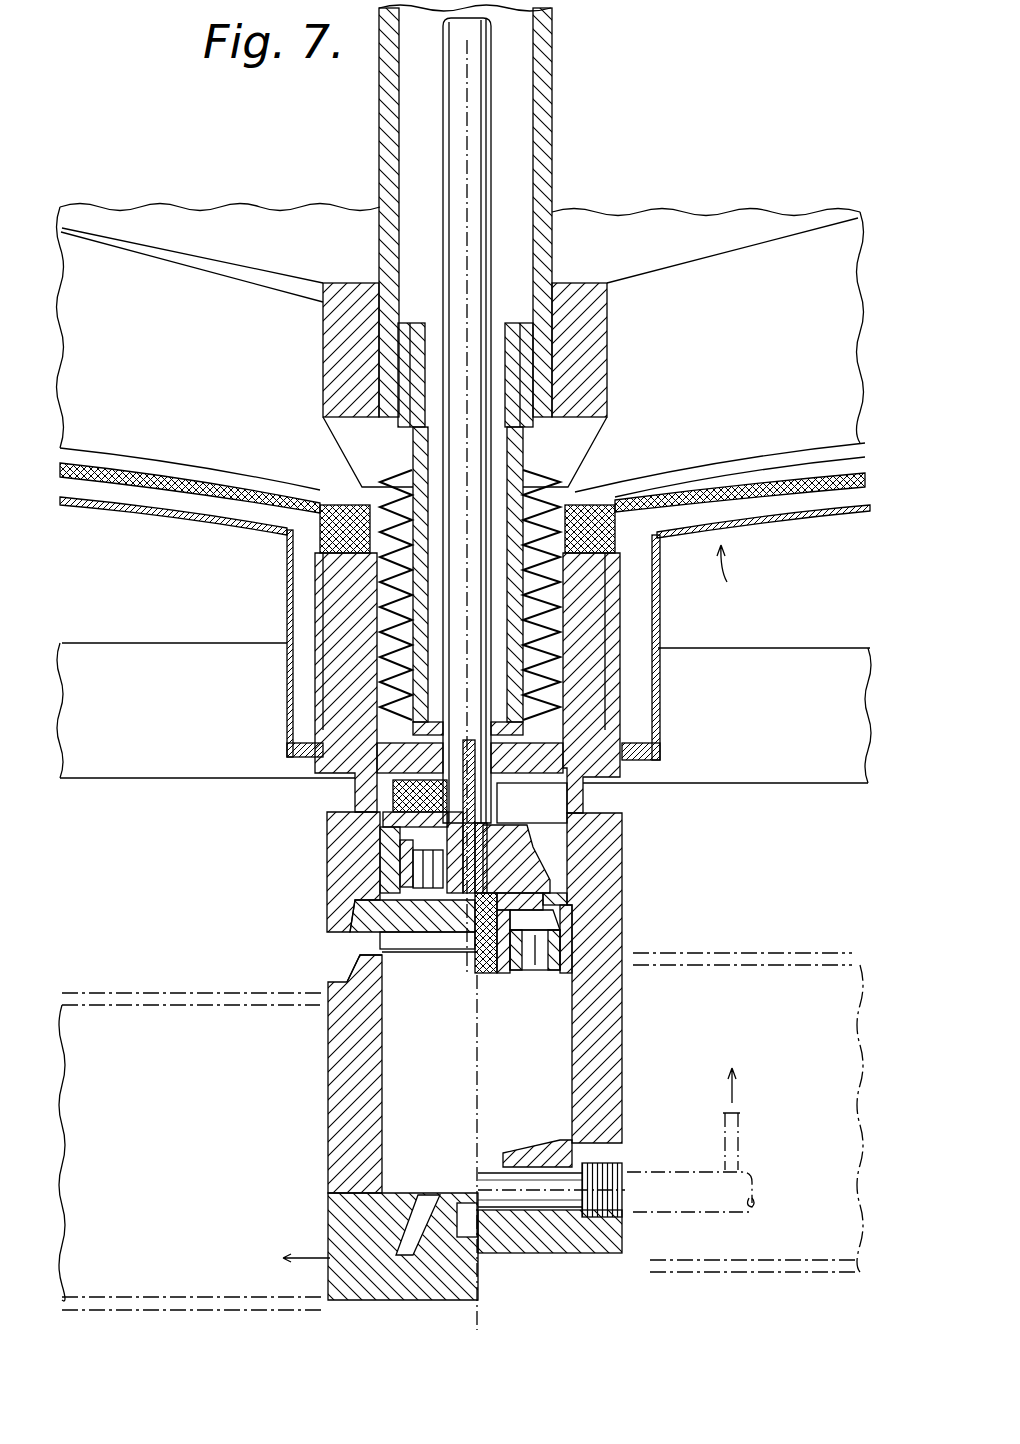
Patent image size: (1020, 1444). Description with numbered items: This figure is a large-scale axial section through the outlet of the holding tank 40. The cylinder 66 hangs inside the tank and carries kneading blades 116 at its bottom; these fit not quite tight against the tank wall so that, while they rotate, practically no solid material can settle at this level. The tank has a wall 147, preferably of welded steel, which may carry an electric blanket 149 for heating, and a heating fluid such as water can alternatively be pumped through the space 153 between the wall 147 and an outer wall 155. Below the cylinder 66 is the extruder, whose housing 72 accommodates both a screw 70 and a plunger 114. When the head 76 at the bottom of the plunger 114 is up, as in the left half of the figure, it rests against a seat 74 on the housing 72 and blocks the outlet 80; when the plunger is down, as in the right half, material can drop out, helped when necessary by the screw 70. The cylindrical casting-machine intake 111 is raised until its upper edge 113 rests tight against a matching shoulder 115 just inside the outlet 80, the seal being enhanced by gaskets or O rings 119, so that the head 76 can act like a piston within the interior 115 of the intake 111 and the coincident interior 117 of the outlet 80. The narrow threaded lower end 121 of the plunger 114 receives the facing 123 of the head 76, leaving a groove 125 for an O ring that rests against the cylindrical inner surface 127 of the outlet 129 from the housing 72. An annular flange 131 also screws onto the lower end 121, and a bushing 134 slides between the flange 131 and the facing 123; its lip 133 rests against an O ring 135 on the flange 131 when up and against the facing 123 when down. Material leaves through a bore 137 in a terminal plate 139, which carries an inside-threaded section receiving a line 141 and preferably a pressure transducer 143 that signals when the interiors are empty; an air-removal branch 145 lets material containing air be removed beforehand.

The cylinder 66 is at (552, 88).
The plunger 114 is at (491, 180).
The kneading blades 116 is at (137, 277).
The wall 147 is at (763, 490).
The space 153 is at (137, 502).
The outer wall 155 is at (190, 522).
The electric blanket 149 is at (823, 500).
The holding tank 40 is at (737, 569).
The screw 70 is at (392, 590).
The housing 72 is at (343, 658).
The outlet 129 is at (507, 760).
The cylindrical inner surface 127 is at (560, 777).
The groove 125 is at (355, 792).
The seat 74 is at (512, 792).
The interior 117 is at (552, 826).
The bushing 134 is at (383, 820).
The lip 133 is at (380, 856).
The outlet 80 is at (327, 887).
The head 76 is at (533, 867).
The facing 123 is at (555, 877).
The O rings 119 is at (578, 900).
The upper edge 113 is at (350, 963).
The interior 115 is at (377, 928).
The lower end 121 is at (473, 960).
The annular flange 131 is at (497, 973).
The O ring 135 is at (570, 962).
The casting-machine intake 111 is at (328, 1140).
The air-removal branch 145 is at (733, 1098).
The line 141 is at (627, 1180).
The bore 137 is at (530, 1197).
The terminal plate 139 is at (575, 1256).
The pressure transducer 143 is at (423, 1207).